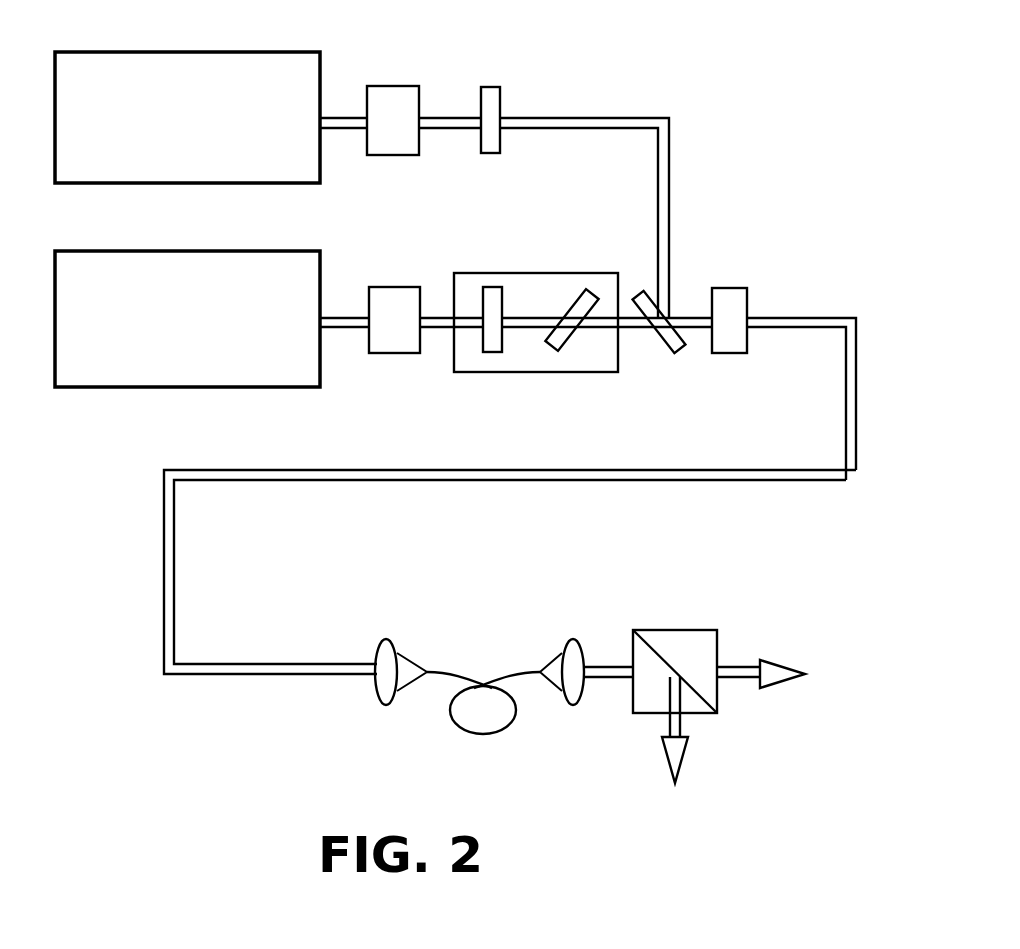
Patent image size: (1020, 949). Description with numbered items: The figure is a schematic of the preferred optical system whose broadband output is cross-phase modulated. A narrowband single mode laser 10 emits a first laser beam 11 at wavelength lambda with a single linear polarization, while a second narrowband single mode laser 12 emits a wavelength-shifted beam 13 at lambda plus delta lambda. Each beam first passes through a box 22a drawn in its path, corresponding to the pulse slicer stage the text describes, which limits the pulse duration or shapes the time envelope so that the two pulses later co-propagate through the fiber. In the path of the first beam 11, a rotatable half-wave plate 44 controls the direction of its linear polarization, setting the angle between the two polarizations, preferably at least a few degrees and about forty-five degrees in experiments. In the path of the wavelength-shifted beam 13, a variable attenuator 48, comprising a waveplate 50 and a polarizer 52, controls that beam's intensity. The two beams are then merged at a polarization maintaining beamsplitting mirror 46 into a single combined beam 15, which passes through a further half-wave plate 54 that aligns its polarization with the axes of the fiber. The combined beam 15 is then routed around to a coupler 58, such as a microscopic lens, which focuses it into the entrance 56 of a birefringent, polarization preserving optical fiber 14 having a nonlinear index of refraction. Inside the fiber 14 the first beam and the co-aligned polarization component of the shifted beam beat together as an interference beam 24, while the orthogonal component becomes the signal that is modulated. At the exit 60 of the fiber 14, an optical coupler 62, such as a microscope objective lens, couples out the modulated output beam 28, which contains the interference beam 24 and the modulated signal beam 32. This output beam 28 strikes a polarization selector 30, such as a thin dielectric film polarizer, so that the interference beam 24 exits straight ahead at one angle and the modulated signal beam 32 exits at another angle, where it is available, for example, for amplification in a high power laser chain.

The narrowband single mode laser 10 is at (172, 53).
The second narrowband single mode laser 12 is at (194, 388).
The laser beam 11 is at (356, 129).
The wavelength-shifted beam 13 is at (355, 328).
The modulator 22a is at (410, 86).
The half-wave plate 44 is at (500, 100).
The variable attenuator 48 is at (536, 322).
The waveplate 50 is at (490, 353).
The polarizer 52 is at (572, 346).
The beamsplitting mirror 46 is at (660, 346).
The half-wave plate 54 is at (737, 288).
The combined beam 15 is at (802, 318).
The coupler 58 is at (385, 692).
The entrance 56 is at (430, 670).
The exit 60 is at (538, 668).
The optical fiber 14 is at (487, 734).
The optical coupler 62 is at (582, 703).
The modulated output beam 28 is at (608, 666).
The polarization selector 30 is at (690, 631).
The interference beam 24 is at (742, 667).
The modulated signal beam 32 is at (690, 730).